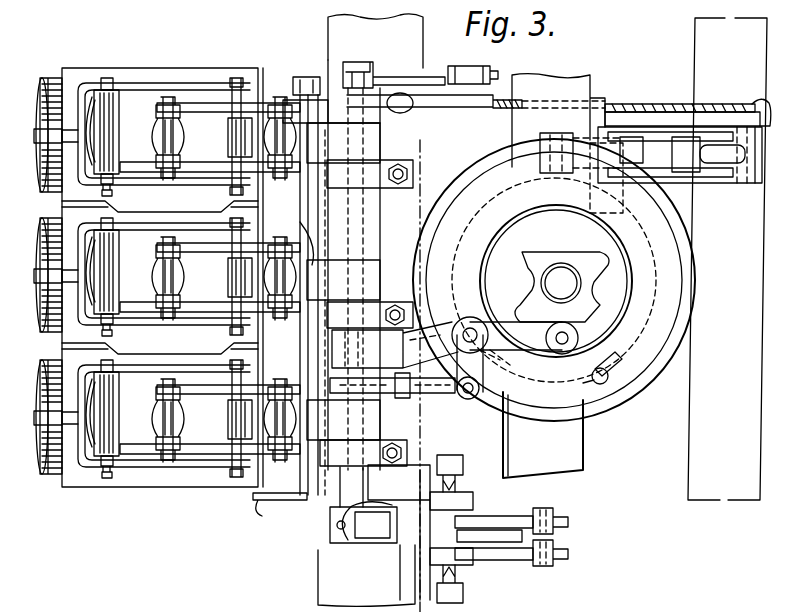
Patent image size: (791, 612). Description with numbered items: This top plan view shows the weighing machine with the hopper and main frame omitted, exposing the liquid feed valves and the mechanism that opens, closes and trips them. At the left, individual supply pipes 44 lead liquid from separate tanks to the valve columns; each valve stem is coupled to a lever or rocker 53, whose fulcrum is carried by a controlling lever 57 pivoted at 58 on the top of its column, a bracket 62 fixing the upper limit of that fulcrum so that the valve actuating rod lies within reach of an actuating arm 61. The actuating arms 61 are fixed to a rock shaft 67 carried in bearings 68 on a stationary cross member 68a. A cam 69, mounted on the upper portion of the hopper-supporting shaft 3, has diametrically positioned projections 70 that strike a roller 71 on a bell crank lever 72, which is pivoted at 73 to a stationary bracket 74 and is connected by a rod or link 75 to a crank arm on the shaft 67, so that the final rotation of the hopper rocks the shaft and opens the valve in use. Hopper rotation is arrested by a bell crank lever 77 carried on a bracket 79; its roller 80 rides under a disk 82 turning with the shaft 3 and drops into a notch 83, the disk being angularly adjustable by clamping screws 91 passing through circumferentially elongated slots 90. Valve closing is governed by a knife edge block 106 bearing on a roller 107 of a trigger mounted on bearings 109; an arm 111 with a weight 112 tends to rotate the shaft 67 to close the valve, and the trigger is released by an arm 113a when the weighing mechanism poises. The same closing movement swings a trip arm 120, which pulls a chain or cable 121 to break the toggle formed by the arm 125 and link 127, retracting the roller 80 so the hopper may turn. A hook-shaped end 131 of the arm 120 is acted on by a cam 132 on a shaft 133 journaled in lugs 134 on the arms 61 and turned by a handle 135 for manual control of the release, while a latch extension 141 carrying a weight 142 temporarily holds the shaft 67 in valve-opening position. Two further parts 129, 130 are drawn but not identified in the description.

The hopper-supporting shaft 3 is at (560, 263).
The supply pipe 44 is at (50, 77).
The lever or rocker 53 is at (192, 165).
The controlling lever 57 is at (83, 88).
The pivot 58 is at (112, 80).
The actuating arm 61 is at (322, 158).
The bracket 62 is at (233, 128).
The rock shaft 67 is at (355, 238).
The bearings 68 is at (392, 188).
The stationary cross member 68a is at (412, 148).
The cam 69 is at (528, 262).
The projections 70 is at (522, 280).
The roller or projection 71 is at (578, 336).
The bell crank lever 72 is at (512, 350).
The pivot 73 is at (475, 318).
The stationary bracket 74 is at (395, 345).
The rod or link 75 is at (432, 390).
The bell crank lever 77 is at (583, 112).
The bracket 79 is at (673, 128).
The roller or projection 80 is at (538, 134).
The disk 82 is at (638, 395).
The notch or recess 83 is at (540, 415).
The circumferentially elongated slots 90 is at (612, 366).
The clamping screws 91 is at (596, 385).
The knife edge block 106 is at (330, 545).
The roller 107 is at (362, 548).
The bearings 109 is at (470, 508).
The arm 111 is at (421, 77).
The weight 112 is at (472, 69).
The trigger-releasing arm 113a is at (360, 495).
The trip arm 120 is at (452, 110).
The chain or cable 121 is at (635, 108).
The arm 125 is at (713, 162).
The link 127 is at (662, 155).
The rod 129 is at (502, 560).
The nut 130 is at (560, 562).
The hook-shaped end 131 is at (283, 85).
The cam or eccentric 132 is at (296, 78).
The shaft 133 is at (318, 216).
The lugs 134 is at (312, 232).
The handle 135 is at (262, 510).
The extension 141 is at (566, 527).
The weight 142 is at (552, 510).